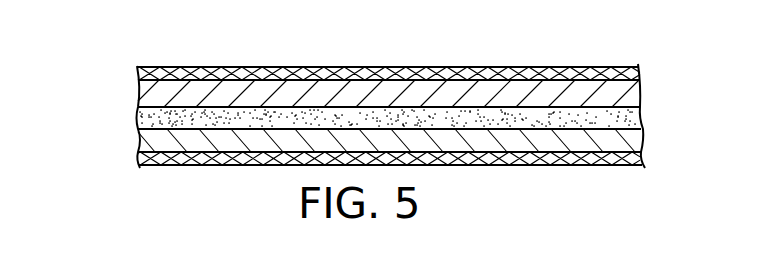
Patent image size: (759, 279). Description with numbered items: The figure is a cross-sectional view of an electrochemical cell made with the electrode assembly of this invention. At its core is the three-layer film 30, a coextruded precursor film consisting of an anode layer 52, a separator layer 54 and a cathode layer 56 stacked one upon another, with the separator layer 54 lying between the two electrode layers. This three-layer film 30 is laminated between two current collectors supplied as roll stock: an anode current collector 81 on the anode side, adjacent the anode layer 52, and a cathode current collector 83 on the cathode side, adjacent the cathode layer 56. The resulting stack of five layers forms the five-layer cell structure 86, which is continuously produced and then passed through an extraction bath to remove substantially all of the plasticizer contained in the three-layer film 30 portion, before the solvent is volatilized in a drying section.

The three-layer film 30 is at (652, 80).
The anode layer 52 is at (151, 91).
The separator layer 54 is at (148, 117).
The cathode layer 56 is at (149, 145).
The anode current collector 81 is at (202, 67).
The cathode current collector 83 is at (553, 165).
The five-layer cell structure 86 is at (470, 47).